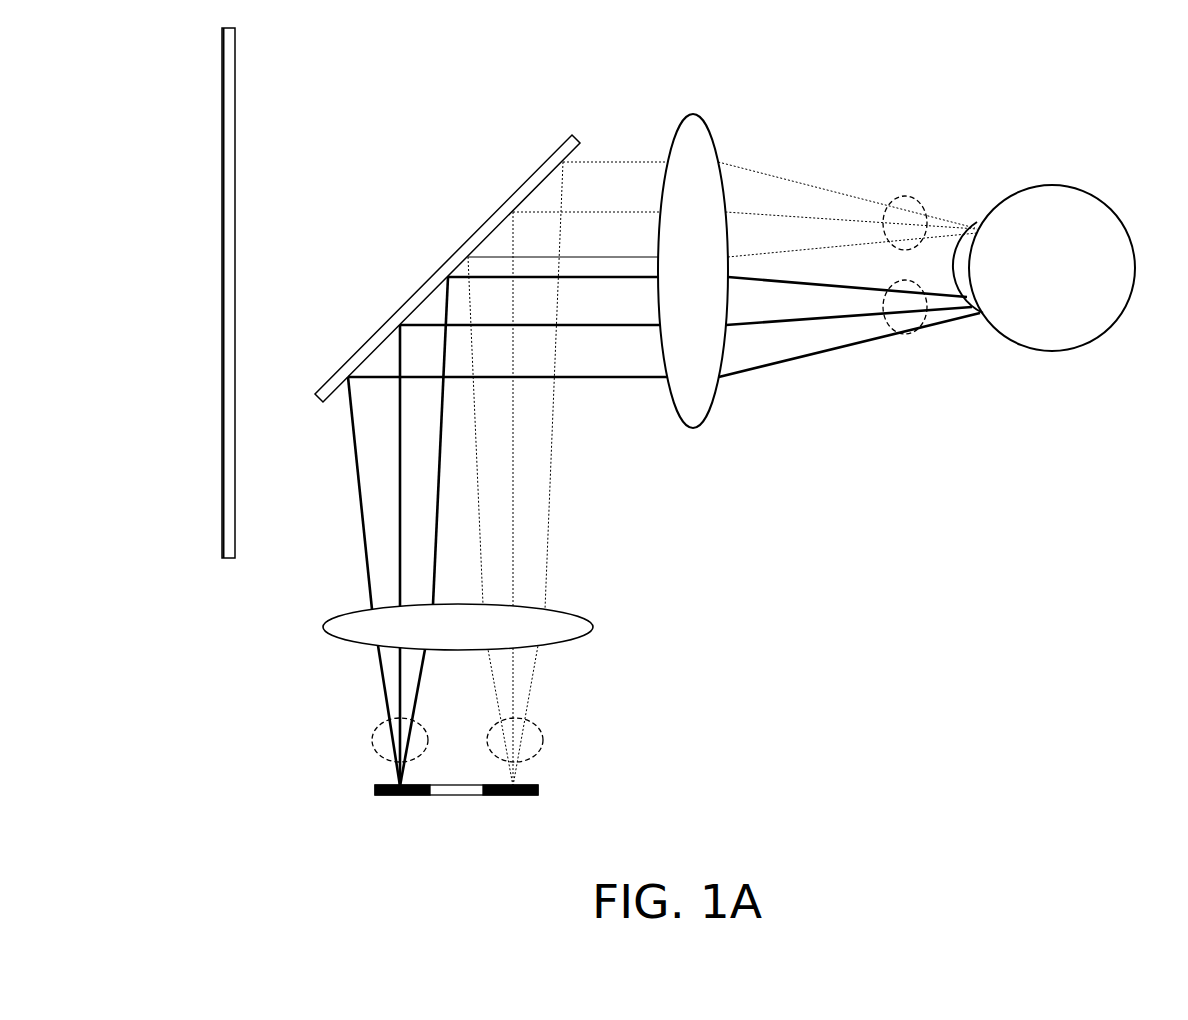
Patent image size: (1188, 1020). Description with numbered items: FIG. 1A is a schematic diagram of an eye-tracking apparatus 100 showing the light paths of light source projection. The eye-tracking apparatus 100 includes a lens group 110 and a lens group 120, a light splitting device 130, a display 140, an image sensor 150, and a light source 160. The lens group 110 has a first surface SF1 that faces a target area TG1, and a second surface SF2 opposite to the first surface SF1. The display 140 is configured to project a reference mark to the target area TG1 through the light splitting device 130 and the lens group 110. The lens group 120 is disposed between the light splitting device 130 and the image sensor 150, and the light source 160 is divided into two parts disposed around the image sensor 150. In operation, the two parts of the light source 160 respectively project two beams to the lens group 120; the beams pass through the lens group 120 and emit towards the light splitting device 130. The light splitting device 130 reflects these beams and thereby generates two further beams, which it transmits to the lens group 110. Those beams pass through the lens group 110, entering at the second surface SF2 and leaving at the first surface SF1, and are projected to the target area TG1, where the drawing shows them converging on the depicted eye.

The eye-tracking apparatus 100 is at (889, 576).
The lens group 110 is at (694, 263).
The lens group 120 is at (577, 622).
The light splitting device 130 is at (475, 238).
The display 140 is at (228, 457).
The image sensor 150 is at (458, 797).
The light source 160 is at (731, 684).
The first surface SF1 is at (715, 140).
The second surface SF2 is at (670, 140).
The target area TG1 is at (1095, 330).